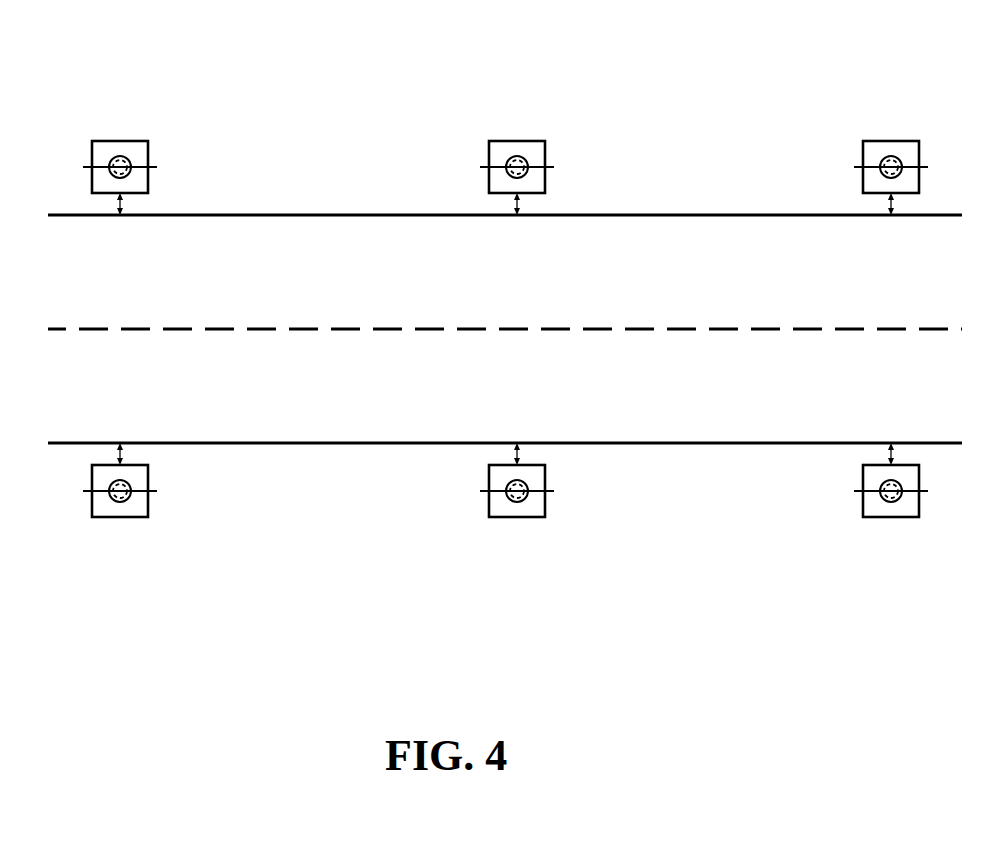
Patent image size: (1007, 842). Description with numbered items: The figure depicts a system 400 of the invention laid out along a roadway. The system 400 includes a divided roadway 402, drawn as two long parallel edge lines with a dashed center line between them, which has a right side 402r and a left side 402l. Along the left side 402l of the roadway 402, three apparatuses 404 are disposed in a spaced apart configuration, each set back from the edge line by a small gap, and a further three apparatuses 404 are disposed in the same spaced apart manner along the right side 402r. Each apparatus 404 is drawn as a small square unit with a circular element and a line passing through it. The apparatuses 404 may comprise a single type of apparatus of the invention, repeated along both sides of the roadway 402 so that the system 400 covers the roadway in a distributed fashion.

The system 400 is at (710, 101).
The divided roadway 402 is at (679, 280).
The left side 402l is at (710, 217).
The right side 402r is at (712, 441).
The apparatuses 404 is at (119, 141).